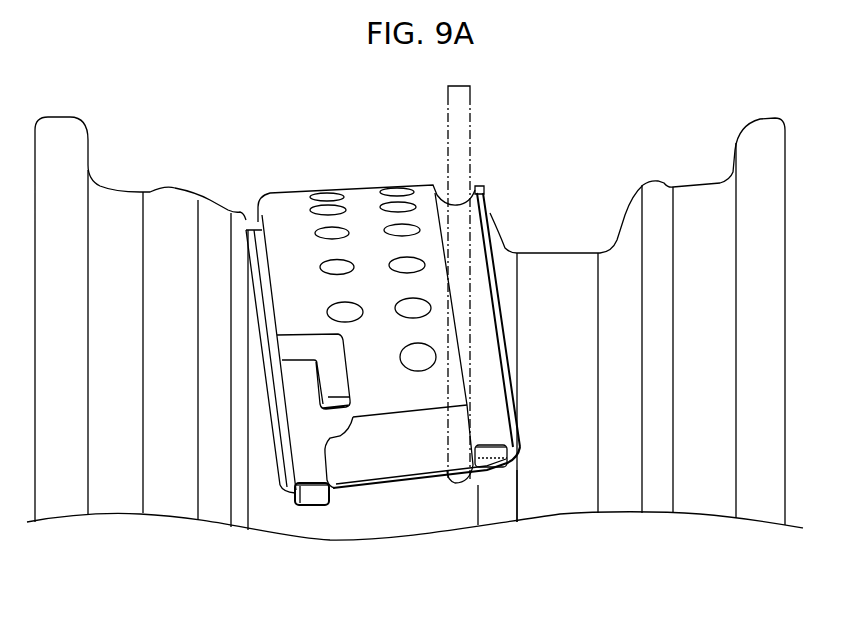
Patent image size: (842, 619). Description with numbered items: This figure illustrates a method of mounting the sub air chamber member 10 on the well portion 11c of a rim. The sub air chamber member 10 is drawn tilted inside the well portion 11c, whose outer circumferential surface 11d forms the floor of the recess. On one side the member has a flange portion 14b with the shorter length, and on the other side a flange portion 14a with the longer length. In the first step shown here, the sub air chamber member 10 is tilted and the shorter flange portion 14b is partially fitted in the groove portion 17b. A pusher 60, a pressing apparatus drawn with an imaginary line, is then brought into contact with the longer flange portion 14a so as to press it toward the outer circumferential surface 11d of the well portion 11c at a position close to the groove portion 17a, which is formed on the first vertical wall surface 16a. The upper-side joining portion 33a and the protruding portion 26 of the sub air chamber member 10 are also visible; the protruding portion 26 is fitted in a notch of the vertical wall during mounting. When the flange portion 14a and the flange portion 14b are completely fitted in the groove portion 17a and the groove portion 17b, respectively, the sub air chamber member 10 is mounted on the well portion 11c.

The sub air chamber member 10 is at (290, 173).
The upper-side joining portion 33a is at (393, 210).
The protruding portion 26 is at (480, 188).
The pusher 60 is at (470, 100).
The flange portion 14a is at (498, 310).
The flange portion 14b is at (272, 418).
The well portion 11c is at (567, 478).
The outer circumferential surface 11d is at (357, 518).
The first vertical wall surface 16a is at (475, 495).
The groove portion 17a is at (474, 518).
The groove portion 17b is at (252, 520).